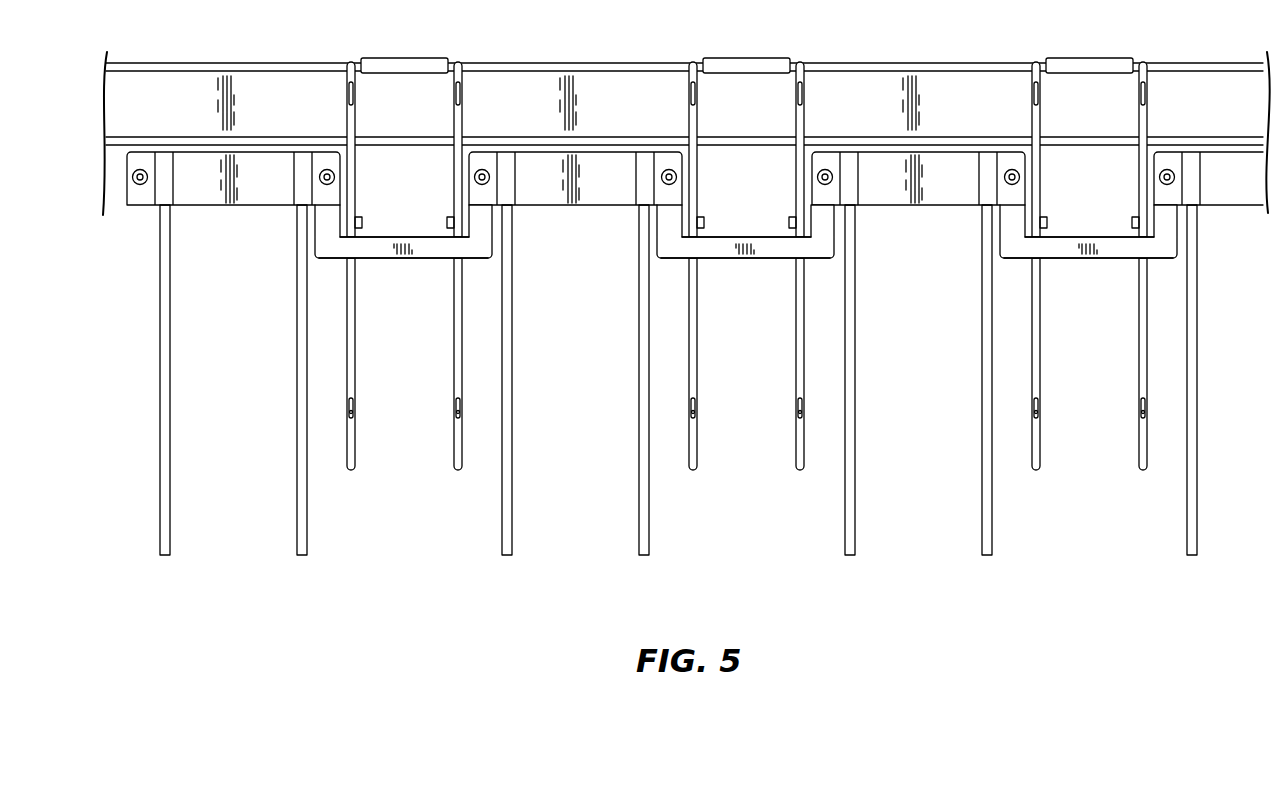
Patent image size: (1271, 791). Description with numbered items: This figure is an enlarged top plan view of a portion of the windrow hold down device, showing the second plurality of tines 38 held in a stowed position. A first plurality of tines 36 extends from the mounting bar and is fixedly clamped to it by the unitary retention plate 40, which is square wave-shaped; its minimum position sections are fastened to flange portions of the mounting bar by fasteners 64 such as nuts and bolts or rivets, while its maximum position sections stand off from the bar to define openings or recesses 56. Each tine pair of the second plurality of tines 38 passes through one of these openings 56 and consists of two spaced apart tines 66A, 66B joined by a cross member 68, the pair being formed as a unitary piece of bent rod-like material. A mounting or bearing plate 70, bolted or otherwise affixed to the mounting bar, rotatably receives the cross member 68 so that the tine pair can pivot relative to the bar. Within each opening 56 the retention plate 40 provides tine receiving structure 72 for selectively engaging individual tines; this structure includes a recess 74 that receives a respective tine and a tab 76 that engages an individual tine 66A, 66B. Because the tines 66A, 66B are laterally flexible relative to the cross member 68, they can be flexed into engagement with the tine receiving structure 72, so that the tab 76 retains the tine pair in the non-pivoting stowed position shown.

The first plurality of tines 36 is at (170, 499).
The second plurality of tines 38 is at (466, 349).
The unitary retention plate 40 is at (404, 262).
The openings or recesses 56 is at (418, 224).
The fasteners 64 is at (137, 190).
The tine 66A is at (356, 377).
The tine 66B is at (453, 377).
The cross member 68 is at (460, 61).
The mounting or bearing plate 70 is at (405, 57).
The tine receiving structure 72 is at (426, 211).
The recess 74 is at (346, 228).
The tab 76 is at (361, 221).